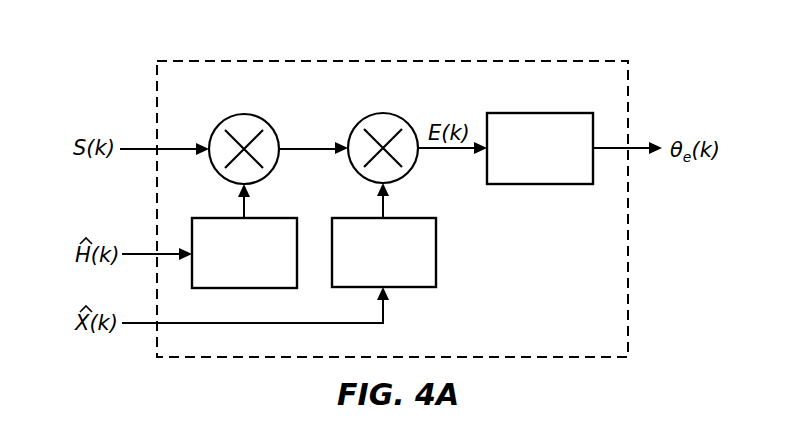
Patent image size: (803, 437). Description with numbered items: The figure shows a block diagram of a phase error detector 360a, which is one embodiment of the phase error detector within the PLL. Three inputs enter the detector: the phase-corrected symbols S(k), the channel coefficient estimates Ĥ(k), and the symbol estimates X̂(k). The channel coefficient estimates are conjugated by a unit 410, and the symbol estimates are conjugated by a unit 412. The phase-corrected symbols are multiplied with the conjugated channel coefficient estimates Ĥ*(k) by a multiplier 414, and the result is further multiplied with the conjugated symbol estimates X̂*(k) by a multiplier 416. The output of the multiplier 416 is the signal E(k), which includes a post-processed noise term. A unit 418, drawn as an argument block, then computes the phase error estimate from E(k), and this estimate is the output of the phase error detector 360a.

The phase error detector 360a is at (378, 61).
The unit 410 is at (272, 218).
The unit 412 is at (414, 218).
The multiplier 414 is at (240, 114).
The multiplier 416 is at (379, 113).
The unit 418 is at (537, 113).